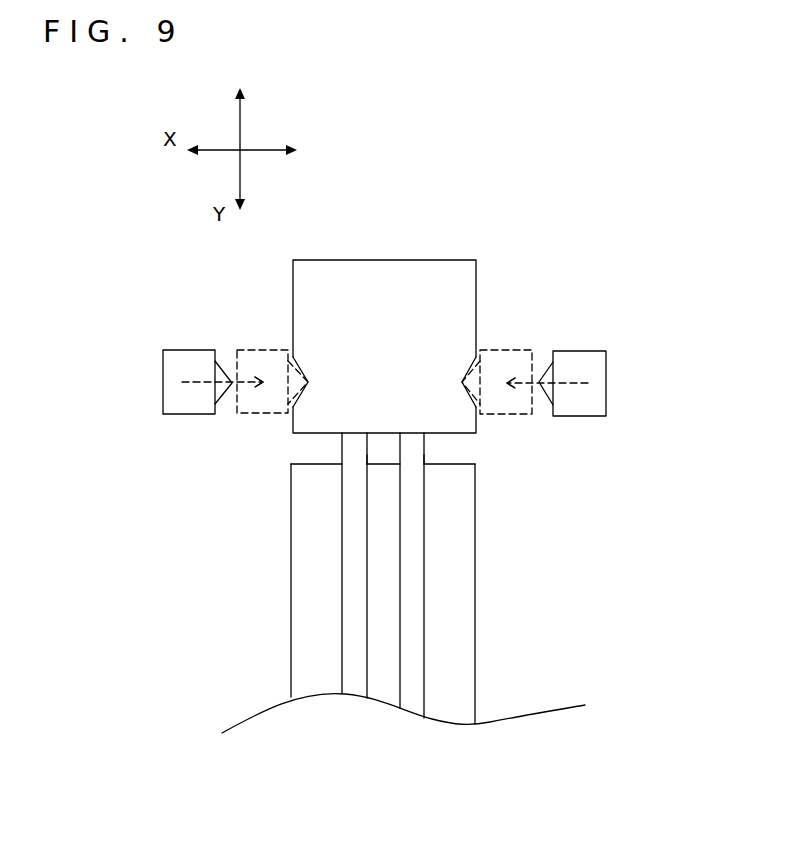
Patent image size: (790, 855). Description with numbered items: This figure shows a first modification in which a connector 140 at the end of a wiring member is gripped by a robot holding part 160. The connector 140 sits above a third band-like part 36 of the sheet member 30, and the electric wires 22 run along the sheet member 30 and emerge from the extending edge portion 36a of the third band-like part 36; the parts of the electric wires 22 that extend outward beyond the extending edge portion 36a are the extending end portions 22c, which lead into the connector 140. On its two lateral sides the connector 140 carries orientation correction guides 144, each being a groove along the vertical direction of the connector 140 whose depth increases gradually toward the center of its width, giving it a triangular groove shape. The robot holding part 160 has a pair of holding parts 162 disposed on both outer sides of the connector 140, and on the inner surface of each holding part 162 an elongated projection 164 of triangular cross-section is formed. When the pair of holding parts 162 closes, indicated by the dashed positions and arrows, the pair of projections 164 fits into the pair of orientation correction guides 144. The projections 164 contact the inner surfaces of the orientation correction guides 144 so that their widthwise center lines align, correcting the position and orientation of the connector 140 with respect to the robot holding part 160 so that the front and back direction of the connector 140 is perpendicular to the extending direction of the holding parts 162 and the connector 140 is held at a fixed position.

The connector 140 is at (436, 238).
The orientation correction guide 144 is at (296, 363).
The robot holding part 160 is at (622, 383).
The holding part 162 is at (247, 349).
The projection 164 is at (219, 407).
The third band-like part 36 is at (291, 505).
The extending edge portion 36a is at (312, 464).
The sheet member 30 is at (291, 596).
The electric wire 22 is at (424, 603).
The extending end portion 22c is at (424, 452).